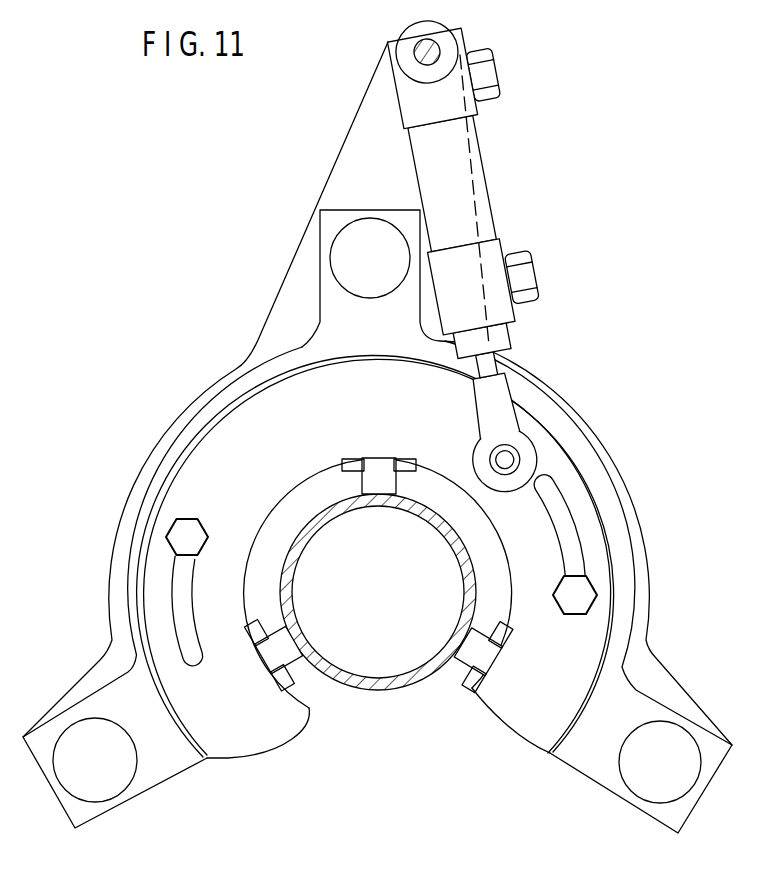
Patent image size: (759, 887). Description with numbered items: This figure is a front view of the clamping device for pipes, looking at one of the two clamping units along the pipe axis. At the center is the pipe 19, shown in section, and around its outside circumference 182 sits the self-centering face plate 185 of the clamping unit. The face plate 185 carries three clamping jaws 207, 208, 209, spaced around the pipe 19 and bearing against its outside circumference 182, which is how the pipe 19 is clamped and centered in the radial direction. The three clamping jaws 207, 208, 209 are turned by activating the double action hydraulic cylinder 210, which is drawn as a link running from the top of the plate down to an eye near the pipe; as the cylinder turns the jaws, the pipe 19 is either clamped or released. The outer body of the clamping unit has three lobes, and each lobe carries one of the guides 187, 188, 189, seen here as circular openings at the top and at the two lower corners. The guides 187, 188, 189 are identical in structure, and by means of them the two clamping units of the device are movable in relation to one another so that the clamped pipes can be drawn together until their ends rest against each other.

The pipe 19 is at (407, 680).
The outside circumference 182 is at (369, 693).
The face plate 185 is at (522, 685).
The guide 187 is at (342, 255).
The guide 188 is at (123, 758).
The guide 189 is at (645, 768).
The clamping jaw 207 is at (283, 650).
The clamping jaw 208 is at (374, 467).
The clamping jaw 209 is at (472, 652).
The double action hydraulic cylinder 210 is at (477, 182).